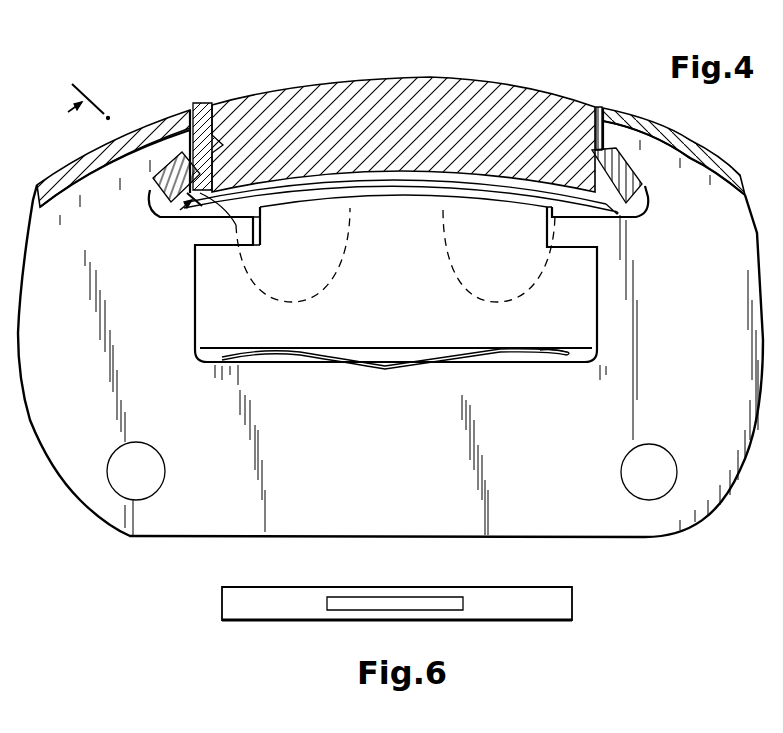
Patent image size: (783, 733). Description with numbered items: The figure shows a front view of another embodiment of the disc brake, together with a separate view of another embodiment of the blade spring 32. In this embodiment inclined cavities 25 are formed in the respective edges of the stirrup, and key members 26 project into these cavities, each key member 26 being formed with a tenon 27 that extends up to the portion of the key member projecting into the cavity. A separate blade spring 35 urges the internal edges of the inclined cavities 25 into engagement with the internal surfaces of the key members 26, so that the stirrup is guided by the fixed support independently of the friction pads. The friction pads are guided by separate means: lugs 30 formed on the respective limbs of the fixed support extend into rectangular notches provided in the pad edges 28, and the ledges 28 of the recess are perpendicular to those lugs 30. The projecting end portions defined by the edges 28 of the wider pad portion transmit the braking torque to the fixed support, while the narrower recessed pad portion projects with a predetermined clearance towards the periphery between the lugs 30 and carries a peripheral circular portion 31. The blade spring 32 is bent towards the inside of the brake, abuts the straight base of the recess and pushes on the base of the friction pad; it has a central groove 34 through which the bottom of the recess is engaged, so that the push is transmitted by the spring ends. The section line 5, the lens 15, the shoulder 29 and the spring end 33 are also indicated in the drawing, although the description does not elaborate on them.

In FIG. 4, the section line 5- 5 is at (126, 161).
In FIG. 4, the lens 15 is at (324, 88).
In FIG. 4, the inclined cavity 25 is at (200, 112).
In FIG. 4, the key member 26 is at (573, 148).
In FIG. 4, the tenon 27 is at (637, 187).
In FIG. 4, the edge of the wider friction pad portion 28 is at (195, 299).
In FIG. 4, the right shoulder 29 is at (576, 248).
In FIG. 4, the lug 30 is at (246, 234).
In FIG. 4, the peripheral circular portion 31 is at (463, 194).
In FIG. 4, the blade spring 32 is at (383, 369).
In FIG. 4, the spring end 33 is at (563, 364).
In FIG. 6, the central groove 34 is at (360, 606).
In FIG. 4, the separate blade spring 35 is at (533, 188).